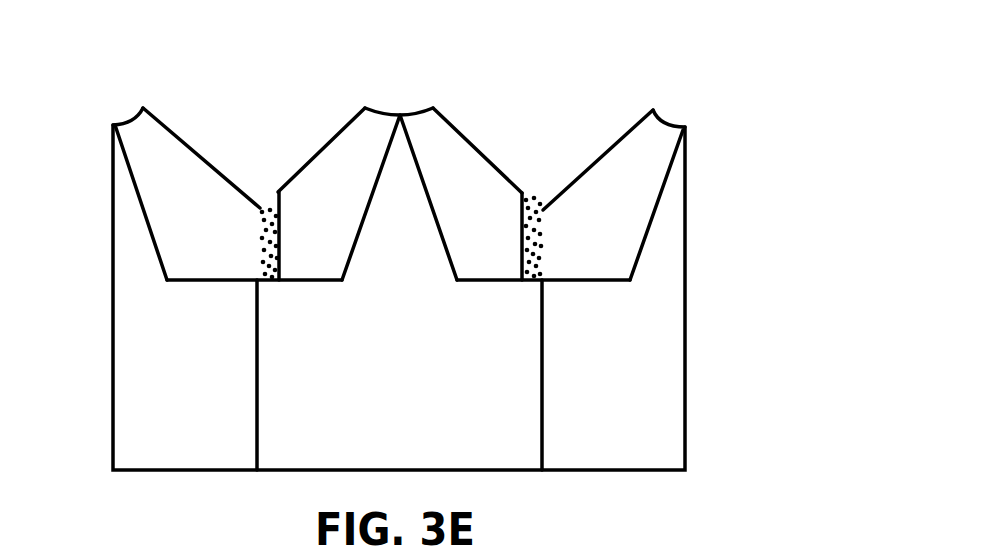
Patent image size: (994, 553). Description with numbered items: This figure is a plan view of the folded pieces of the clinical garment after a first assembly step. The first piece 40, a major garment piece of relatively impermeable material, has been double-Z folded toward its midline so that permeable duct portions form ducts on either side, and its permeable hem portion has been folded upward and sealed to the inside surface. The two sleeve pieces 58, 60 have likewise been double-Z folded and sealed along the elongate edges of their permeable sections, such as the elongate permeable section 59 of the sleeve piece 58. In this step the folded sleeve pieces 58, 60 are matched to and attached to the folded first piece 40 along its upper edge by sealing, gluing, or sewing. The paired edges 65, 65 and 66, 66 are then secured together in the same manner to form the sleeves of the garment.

The first piece 40 is at (700, 260).
The sleeve piece 58 is at (167, 123).
The elongate permeable section 59 is at (262, 207).
The sleeve piece 60 is at (525, 193).
The edges 65 is at (137, 195).
The edges 66 is at (420, 163).